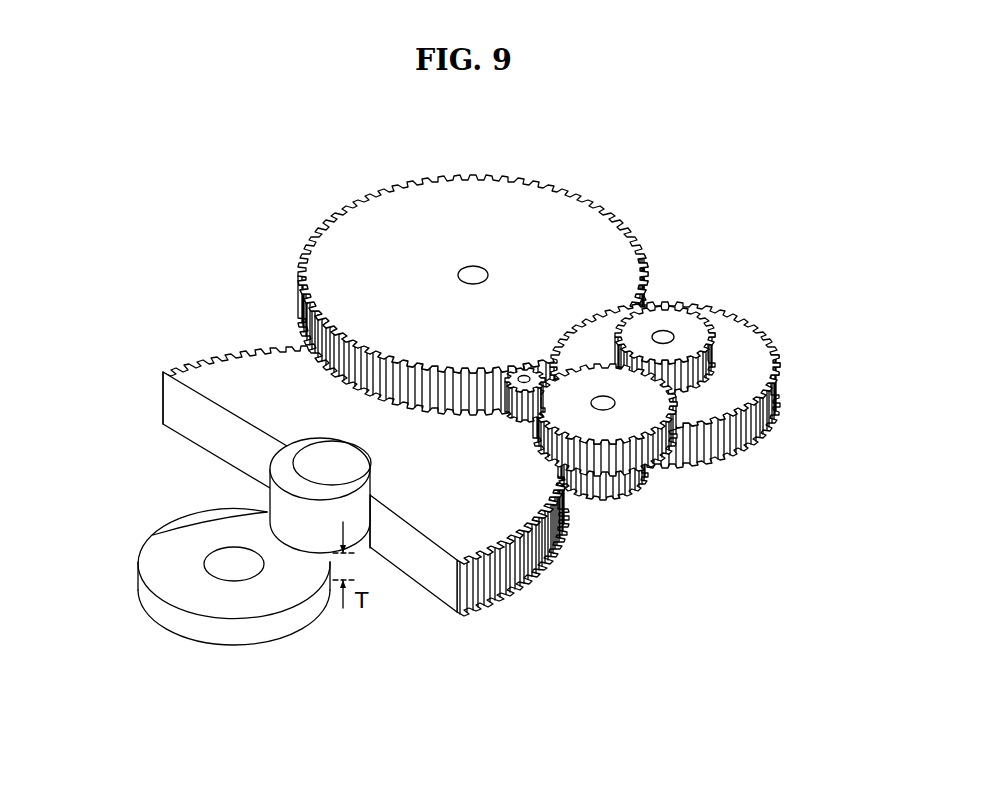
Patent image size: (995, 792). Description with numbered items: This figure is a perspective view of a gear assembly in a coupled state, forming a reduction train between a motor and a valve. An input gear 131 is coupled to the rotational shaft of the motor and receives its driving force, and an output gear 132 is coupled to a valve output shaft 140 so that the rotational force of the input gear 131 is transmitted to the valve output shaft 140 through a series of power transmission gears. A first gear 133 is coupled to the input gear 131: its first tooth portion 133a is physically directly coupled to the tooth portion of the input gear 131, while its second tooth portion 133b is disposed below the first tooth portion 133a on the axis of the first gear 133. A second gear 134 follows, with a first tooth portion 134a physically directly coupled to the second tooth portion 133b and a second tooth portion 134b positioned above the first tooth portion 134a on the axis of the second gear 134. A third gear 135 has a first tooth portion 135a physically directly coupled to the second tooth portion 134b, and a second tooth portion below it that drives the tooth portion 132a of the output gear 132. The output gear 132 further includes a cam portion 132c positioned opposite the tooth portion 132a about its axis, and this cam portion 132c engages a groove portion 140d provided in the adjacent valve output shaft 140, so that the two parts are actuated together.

The input gear 131 is at (527, 367).
The output gear 132 is at (334, 482).
The tooth portion of the output gear 132a is at (248, 338).
The cam portion of the output gear 132c is at (273, 543).
The first gear 133 is at (679, 457).
The first tooth portion of the first gear 133a is at (650, 443).
The second tooth portion of the first gear 133b is at (633, 490).
The second gear 134 is at (720, 363).
The first tooth portion of the second gear 134a is at (780, 397).
The second tooth portion of the second gear 134b is at (713, 358).
The third gear 135 is at (472, 270).
The first tooth portion of the third gear 135a is at (360, 200).
The valve output shaft 140 is at (180, 577).
The groove portion 140d is at (160, 538).